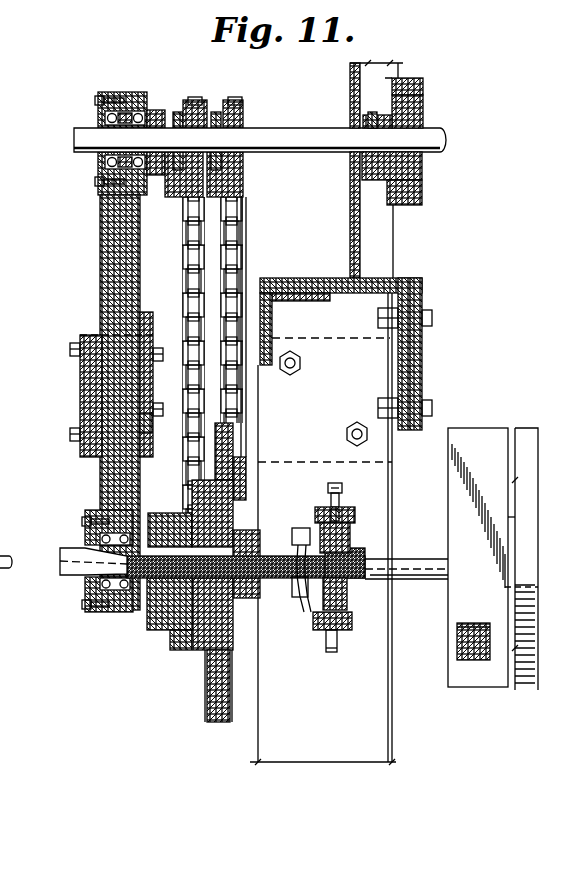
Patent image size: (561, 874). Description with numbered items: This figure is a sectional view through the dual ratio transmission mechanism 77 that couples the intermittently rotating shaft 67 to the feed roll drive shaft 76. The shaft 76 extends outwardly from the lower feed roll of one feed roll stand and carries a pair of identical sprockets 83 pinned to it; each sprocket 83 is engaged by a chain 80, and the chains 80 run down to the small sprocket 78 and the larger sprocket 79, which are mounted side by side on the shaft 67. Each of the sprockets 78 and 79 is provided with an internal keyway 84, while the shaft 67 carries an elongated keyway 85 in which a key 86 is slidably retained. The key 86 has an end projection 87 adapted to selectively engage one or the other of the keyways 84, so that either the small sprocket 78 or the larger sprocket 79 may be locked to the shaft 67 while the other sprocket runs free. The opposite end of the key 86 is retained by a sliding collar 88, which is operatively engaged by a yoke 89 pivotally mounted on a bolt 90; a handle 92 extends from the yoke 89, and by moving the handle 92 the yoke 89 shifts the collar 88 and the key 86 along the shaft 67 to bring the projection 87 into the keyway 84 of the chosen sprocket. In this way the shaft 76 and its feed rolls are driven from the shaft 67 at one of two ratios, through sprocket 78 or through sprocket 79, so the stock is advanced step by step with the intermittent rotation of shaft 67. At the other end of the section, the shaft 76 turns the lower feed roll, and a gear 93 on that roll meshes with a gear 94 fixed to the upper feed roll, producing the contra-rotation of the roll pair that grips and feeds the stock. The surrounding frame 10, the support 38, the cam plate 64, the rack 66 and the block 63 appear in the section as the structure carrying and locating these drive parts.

The frame 10 is at (420, 380).
The support post 38 is at (342, 91).
The block 63 is at (457, 648).
The cam plate 64 is at (468, 438).
The rack 66 is at (517, 706).
The shaft 67 is at (440, 581).
The shaft 76 is at (74, 139).
The dual ratio transmission mechanism 77 is at (66, 697).
The small sprocket 78 is at (160, 609).
The larger sprocket 79 is at (207, 698).
The chain 80 is at (222, 268).
The sprocket 83 is at (236, 100).
The internal keyway 84 is at (163, 545).
The elongated keyway 85 is at (76, 573).
The key 86 is at (268, 556).
The end projection 87 is at (240, 533).
The sliding collar 88 is at (352, 535).
The yoke 89 is at (355, 512).
The bolt 90 is at (300, 606).
The handle 92 is at (12, 547).
The gear 93 is at (422, 181).
The meshing gear 94 is at (428, 88).